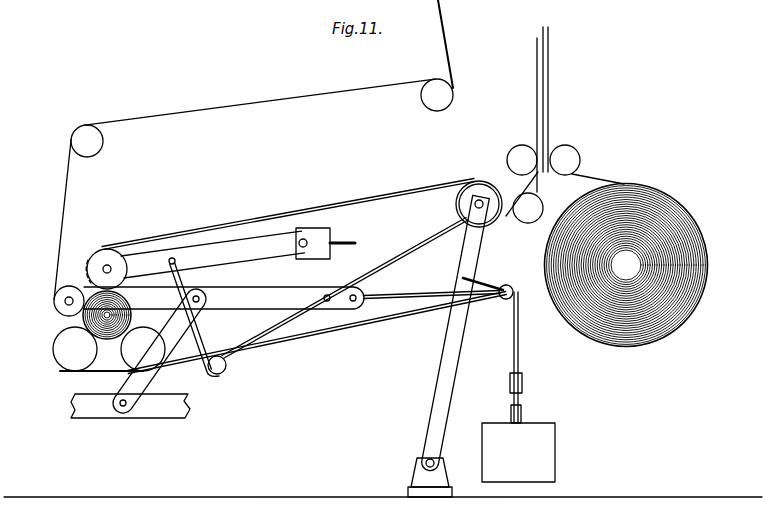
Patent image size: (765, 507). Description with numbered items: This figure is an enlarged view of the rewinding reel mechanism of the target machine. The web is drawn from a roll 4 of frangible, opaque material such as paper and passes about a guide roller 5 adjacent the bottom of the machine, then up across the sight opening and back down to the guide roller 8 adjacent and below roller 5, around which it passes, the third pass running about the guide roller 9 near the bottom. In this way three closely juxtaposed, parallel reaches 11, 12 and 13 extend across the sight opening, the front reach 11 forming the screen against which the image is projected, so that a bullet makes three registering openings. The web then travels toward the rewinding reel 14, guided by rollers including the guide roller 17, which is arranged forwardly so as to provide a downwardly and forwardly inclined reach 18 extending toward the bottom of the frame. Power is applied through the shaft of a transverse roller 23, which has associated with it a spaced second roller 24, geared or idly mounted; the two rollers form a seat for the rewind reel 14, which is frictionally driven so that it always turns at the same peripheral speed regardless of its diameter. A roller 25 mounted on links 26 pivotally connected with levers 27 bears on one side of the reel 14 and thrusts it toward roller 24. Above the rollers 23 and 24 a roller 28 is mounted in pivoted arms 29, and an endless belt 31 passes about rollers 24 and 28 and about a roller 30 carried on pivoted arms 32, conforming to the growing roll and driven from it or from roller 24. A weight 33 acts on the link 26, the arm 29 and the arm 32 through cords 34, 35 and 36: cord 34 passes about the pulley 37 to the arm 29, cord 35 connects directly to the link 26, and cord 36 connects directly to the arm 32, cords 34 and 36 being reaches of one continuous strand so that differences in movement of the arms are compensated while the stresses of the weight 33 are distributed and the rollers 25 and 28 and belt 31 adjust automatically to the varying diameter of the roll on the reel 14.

The roll of web 4 is at (658, 204).
The guide roller 5 is at (578, 150).
The guide roller 8 is at (514, 206).
The guide roller 9 is at (514, 147).
The front reach 11 is at (549, 64).
The second reach 12 is at (544, 93).
The third reach 13 is at (536, 98).
The rewinding reel 14 is at (95, 317).
The guide roller 17 is at (426, 90).
The inclined reach 18 is at (451, 44).
The roller 23 is at (68, 357).
The second roller 24 is at (145, 358).
The roller 25 is at (58, 290).
The link 26 is at (268, 285).
The lever 27 is at (178, 330).
The roller 28 is at (111, 252).
The arm 29 is at (222, 252).
The roller 30 is at (477, 190).
The endless belt 31 is at (390, 190).
The pivoted arm 32 is at (447, 345).
The weight 33 is at (535, 441).
The cord 34 is at (338, 348).
The cord 35 is at (410, 293).
The cord 36 is at (490, 286).
The pulley 37 is at (224, 371).